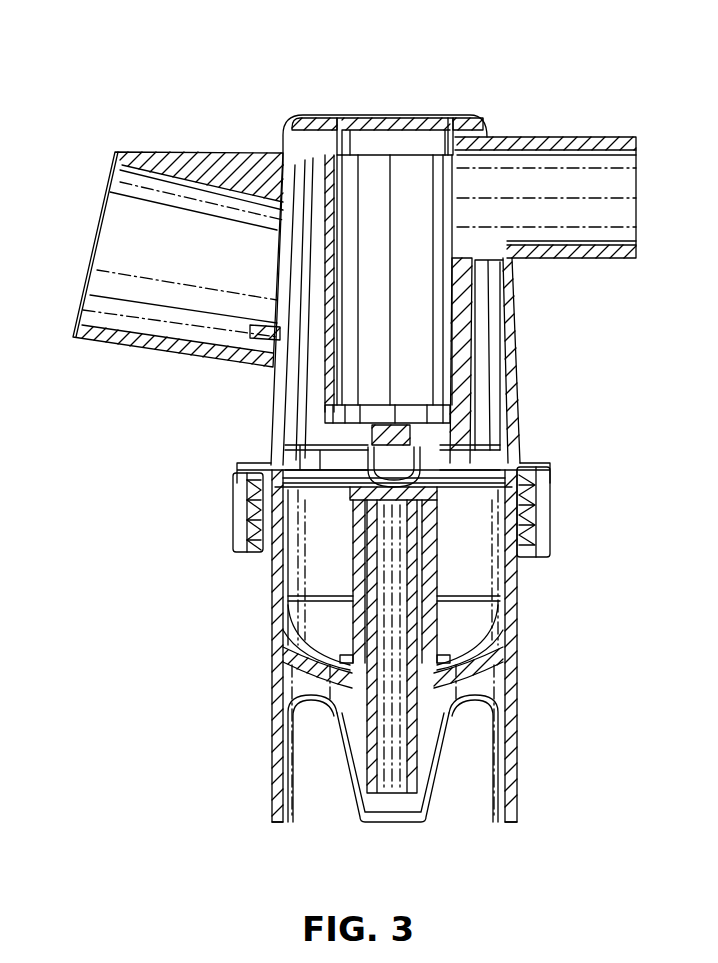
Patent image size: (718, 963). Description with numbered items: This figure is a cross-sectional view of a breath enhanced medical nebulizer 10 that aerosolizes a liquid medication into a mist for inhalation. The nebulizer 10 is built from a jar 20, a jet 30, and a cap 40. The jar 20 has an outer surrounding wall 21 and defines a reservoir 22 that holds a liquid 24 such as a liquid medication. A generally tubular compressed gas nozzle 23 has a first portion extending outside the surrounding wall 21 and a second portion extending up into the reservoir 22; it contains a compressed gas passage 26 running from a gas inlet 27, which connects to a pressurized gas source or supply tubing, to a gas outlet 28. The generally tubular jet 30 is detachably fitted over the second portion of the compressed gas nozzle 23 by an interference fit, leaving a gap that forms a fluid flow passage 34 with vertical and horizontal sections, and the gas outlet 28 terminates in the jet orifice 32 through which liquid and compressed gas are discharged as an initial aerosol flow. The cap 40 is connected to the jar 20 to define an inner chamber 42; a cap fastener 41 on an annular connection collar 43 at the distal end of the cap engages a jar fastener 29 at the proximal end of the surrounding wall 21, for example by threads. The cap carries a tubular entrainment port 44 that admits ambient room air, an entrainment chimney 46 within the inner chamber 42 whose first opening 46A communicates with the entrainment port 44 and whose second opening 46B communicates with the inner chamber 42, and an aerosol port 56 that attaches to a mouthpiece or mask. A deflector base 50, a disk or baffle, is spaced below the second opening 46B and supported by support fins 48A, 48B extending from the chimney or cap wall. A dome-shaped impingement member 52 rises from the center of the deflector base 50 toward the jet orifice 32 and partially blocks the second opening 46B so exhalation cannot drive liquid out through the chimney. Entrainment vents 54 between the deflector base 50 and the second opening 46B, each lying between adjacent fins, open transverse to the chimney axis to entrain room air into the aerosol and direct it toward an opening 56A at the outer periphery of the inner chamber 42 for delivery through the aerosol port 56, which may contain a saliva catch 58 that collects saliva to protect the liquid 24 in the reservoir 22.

The breath enhanced medical nebulizer 10 is at (228, 108).
The jar 20 is at (533, 628).
The outer surrounding wall 21 is at (278, 612).
The reservoir 22 is at (482, 583).
The compressed gas nozzle 23 is at (434, 709).
The liquid 24 is at (300, 615).
The compressed gas passage 26 is at (390, 702).
The gas inlet 27 is at (392, 782).
The gas outlet 28 is at (430, 512).
The jar fastener 29 is at (237, 534).
The jet 30 is at (343, 556).
The jet orifice 32 is at (432, 502).
The fluid flow passage 34 is at (438, 568).
The cap 40 is at (250, 419).
The cap fastener 41 is at (237, 505).
The inner chamber 42 is at (487, 330).
The annular connection collar 43 is at (552, 490).
The entrainment port 44 is at (585, 183).
The entrainment chimney 46 is at (430, 292).
The first opening 46A is at (476, 178).
The second opening 46B is at (427, 407).
The support fin 48A is at (465, 358).
The support fin 48B is at (345, 438).
The deflector base 50 is at (340, 450).
The impingement member 52 is at (376, 462).
The entrainment vent 54 is at (428, 438).
The aerosol port 56 is at (157, 215).
The opening 56A is at (280, 268).
The saliva catch 58 is at (267, 347).